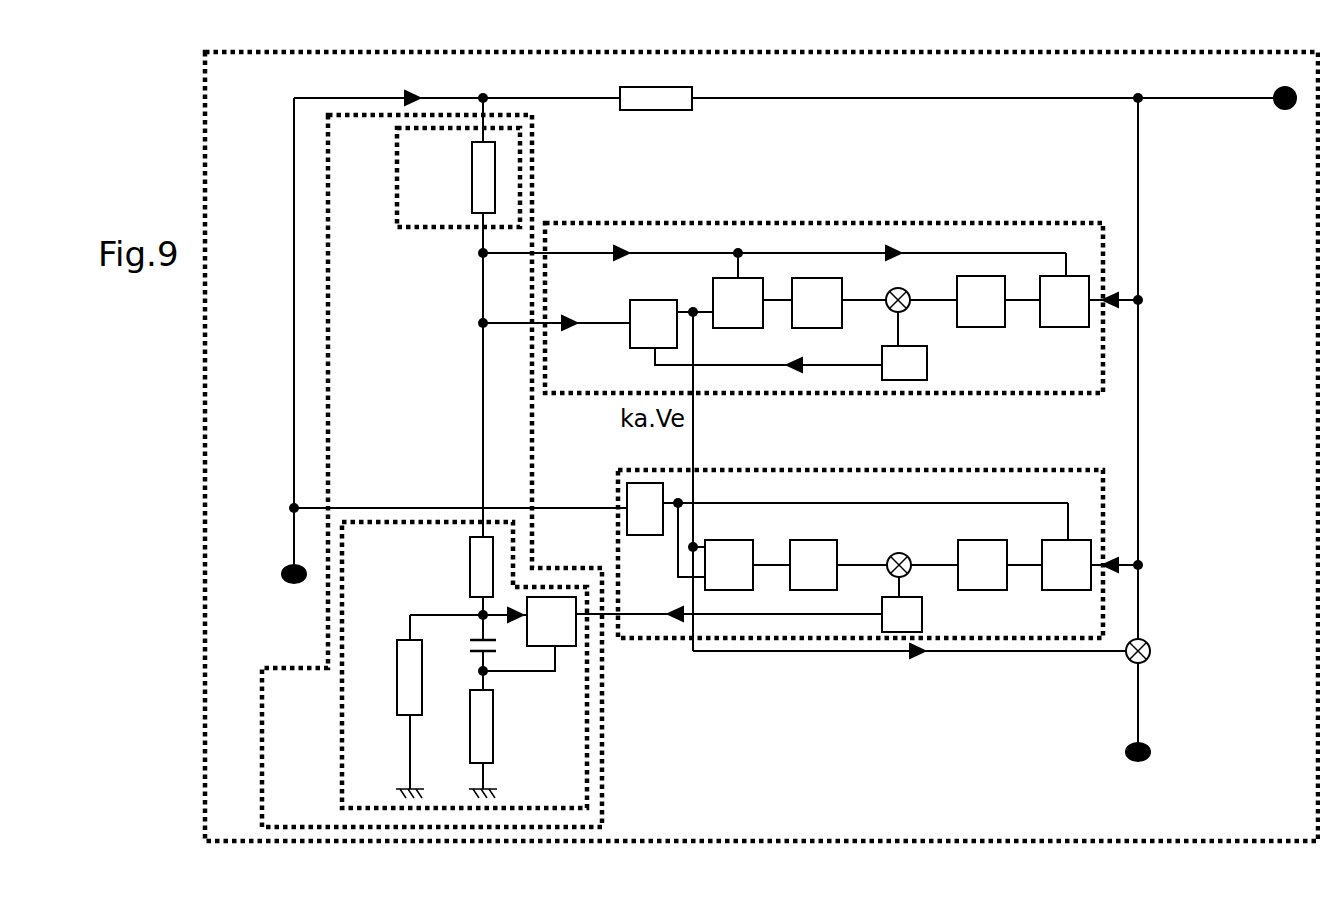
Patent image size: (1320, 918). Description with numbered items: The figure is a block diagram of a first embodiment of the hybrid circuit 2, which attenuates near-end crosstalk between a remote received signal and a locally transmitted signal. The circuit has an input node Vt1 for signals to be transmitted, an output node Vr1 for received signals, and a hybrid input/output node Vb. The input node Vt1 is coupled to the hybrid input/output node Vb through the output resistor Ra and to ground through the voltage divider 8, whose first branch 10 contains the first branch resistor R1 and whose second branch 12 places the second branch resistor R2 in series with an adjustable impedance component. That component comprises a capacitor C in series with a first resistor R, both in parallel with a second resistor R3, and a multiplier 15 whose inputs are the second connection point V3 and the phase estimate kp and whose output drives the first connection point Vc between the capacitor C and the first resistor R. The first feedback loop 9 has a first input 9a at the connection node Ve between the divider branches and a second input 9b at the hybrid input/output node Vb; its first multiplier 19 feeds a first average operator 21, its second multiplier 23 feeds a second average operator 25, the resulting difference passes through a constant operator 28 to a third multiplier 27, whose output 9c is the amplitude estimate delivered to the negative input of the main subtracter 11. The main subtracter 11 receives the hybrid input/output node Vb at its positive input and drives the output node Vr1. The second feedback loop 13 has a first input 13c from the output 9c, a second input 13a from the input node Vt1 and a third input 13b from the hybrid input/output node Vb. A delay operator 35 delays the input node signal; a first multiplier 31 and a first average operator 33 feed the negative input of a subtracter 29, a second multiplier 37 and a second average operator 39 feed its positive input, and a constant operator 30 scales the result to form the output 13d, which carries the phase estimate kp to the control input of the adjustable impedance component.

The hybrid circuit 2 is at (968, 840).
The voltage divider 8 is at (328, 396).
The first feedback loop 9 is at (1057, 222).
The first input of first feedback loop 9a is at (563, 258).
The second input of first feedback loop 9b is at (1105, 298).
The output of first feedback loop 9c is at (697, 394).
The first branch 10 is at (397, 182).
The main subtracter 11 is at (1152, 650).
The second branch 12 is at (340, 742).
The second feedback loop 13 is at (1103, 505).
The second input of second feedback loop 13a is at (625, 508).
The third input of second feedback loop 13b is at (1103, 560).
The first input of second feedback loop 13c is at (718, 640).
The output of second feedback loop 13d is at (640, 616).
The multiplier 15 is at (576, 640).
The first multiplier of first feedback loop 19 is at (878, 307).
The first average operator of first feedback loop 21 is at (992, 327).
The second multiplier of first feedback loop 23 is at (720, 286).
The second average operator of first feedback loop 25 is at (813, 285).
The third multiplier 27 is at (630, 312).
The constant operator 28 is at (927, 360).
The subtracter of second feedback loop 29 is at (905, 552).
The constant operator of second feedback loop 30 is at (882, 622).
The first multiplier of second feedback loop 31 is at (1060, 590).
The first average operator of second feedback loop 33 is at (975, 590).
The delay operator 35 is at (627, 490).
The second multiplier of second feedback loop 37 is at (713, 545).
The second average operator of second feedback loop 39 is at (800, 545).
The first branch resistor R1 is at (472, 171).
The second branch resistor R2 is at (470, 562).
The second resistor R3 is at (397, 695).
The output resistor Ra is at (645, 110).
The first resistor R is at (493, 720).
The capacitor C is at (470, 645).
The connection node Ve is at (478, 254).
The hybrid input/output node Vb is at (1285, 110).
The input node Vt1 is at (294, 584).
The output node Vr1 is at (1150, 754).
The second connection point V3 is at (480, 618).
The first connection point Vc is at (487, 670).
The phase estimate kp is at (618, 616).